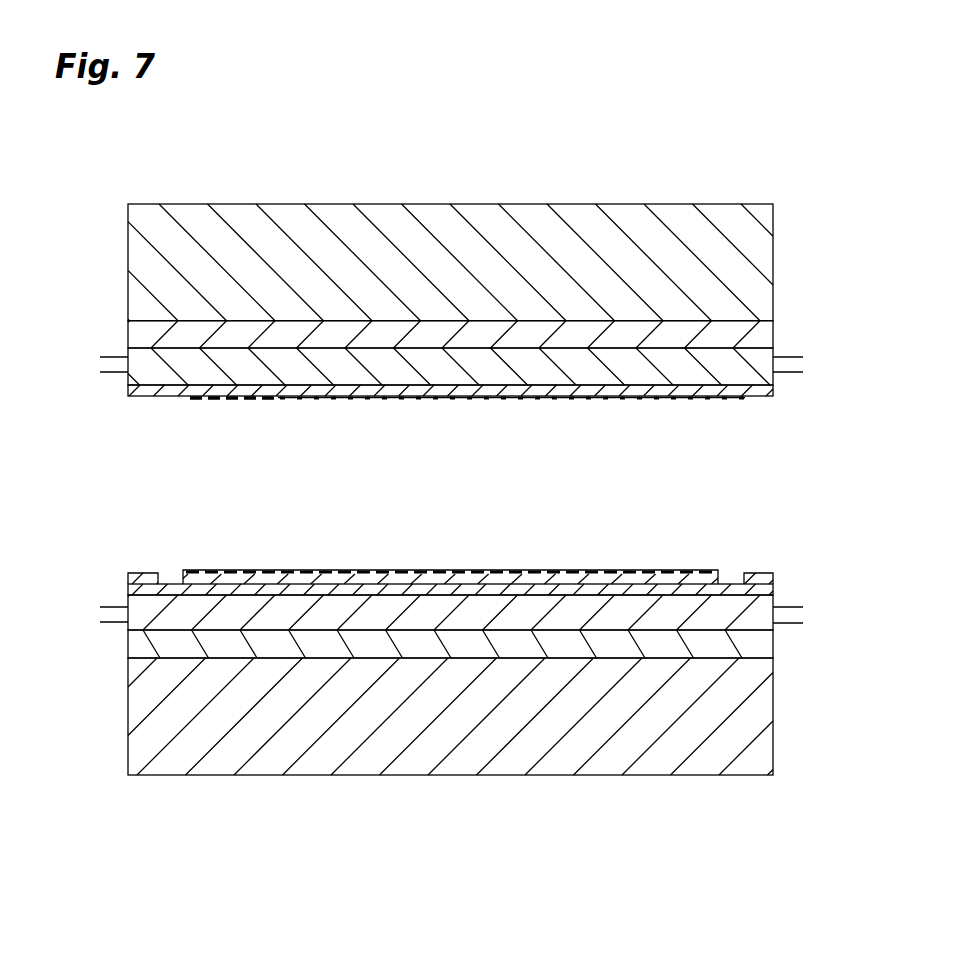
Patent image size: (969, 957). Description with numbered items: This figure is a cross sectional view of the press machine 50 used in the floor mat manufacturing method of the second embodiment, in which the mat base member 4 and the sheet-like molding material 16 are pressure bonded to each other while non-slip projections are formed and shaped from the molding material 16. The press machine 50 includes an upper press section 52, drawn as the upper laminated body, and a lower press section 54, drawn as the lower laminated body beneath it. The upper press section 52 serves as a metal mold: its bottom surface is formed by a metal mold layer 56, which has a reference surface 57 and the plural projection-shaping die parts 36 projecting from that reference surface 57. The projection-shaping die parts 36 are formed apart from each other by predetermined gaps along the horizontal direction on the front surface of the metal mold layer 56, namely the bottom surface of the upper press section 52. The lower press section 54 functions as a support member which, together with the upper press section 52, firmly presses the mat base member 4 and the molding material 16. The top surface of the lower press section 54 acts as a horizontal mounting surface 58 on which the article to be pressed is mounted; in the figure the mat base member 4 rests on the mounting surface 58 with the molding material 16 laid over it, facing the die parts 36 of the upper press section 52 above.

The press machine 50 is at (653, 150).
The upper press section 52 is at (774, 270).
The lower press section 54 is at (774, 668).
The metal mold layer 56 is at (773, 396).
The reference surface 57 is at (746, 397).
The projection-shaping die parts 36 is at (585, 441).
The sheet-like molding material 16 is at (393, 569).
The mat base member 4 is at (453, 582).
The horizontal mounting surface 58 is at (731, 583).